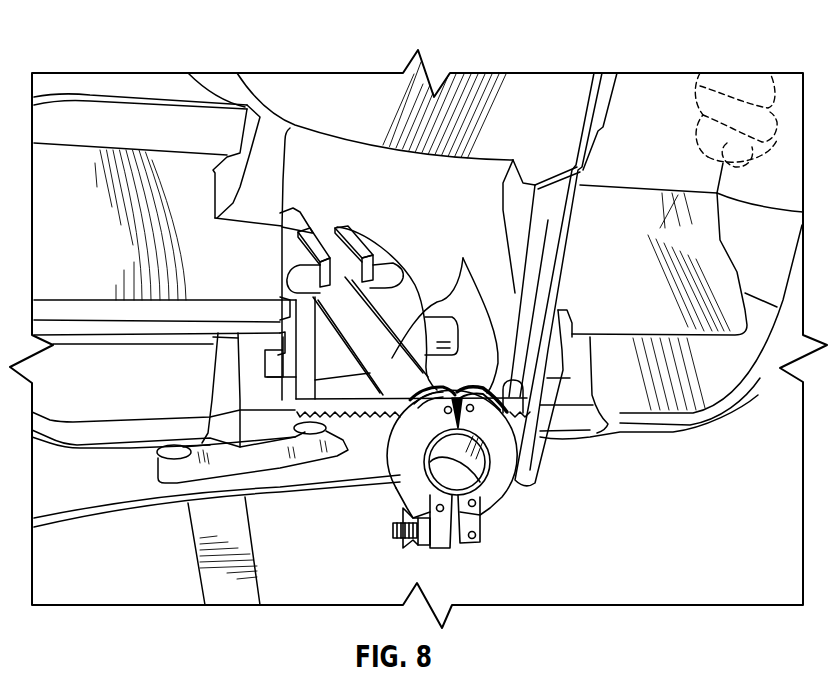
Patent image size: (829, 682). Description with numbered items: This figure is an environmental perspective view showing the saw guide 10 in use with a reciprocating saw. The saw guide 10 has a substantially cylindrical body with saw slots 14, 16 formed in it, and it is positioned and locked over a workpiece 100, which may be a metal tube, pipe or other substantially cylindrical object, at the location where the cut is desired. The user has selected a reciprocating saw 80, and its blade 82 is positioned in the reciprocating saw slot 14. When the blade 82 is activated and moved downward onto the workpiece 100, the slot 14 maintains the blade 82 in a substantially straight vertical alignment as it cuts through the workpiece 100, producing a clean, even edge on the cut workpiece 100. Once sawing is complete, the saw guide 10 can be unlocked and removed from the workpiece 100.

The reciprocating saw 80 is at (189, 373).
The workpiece 100 is at (445, 313).
The blade 82 is at (348, 462).
The reciprocating saw slot 14 is at (413, 394).
The saw guide 10 is at (505, 491).
The saw slot 16 is at (428, 460).